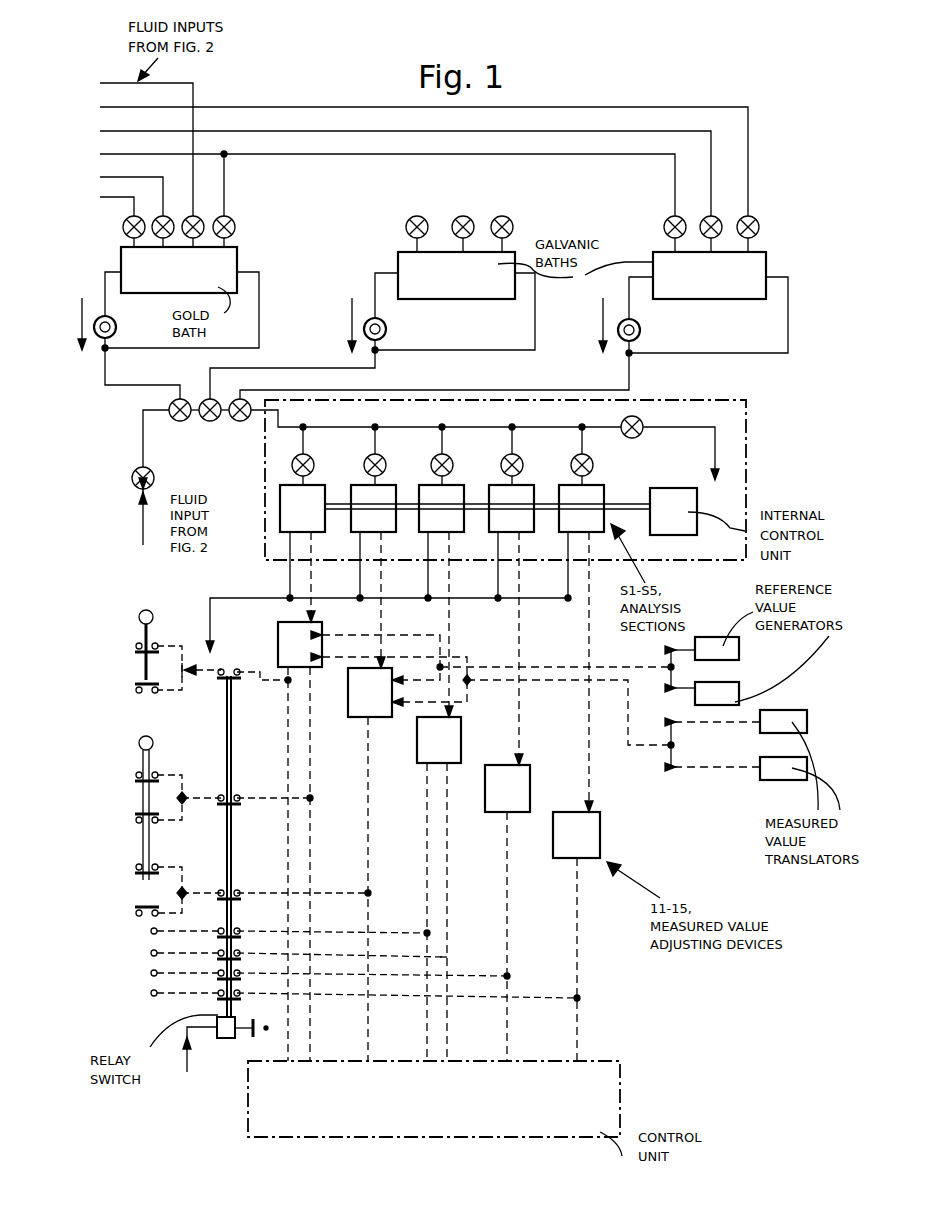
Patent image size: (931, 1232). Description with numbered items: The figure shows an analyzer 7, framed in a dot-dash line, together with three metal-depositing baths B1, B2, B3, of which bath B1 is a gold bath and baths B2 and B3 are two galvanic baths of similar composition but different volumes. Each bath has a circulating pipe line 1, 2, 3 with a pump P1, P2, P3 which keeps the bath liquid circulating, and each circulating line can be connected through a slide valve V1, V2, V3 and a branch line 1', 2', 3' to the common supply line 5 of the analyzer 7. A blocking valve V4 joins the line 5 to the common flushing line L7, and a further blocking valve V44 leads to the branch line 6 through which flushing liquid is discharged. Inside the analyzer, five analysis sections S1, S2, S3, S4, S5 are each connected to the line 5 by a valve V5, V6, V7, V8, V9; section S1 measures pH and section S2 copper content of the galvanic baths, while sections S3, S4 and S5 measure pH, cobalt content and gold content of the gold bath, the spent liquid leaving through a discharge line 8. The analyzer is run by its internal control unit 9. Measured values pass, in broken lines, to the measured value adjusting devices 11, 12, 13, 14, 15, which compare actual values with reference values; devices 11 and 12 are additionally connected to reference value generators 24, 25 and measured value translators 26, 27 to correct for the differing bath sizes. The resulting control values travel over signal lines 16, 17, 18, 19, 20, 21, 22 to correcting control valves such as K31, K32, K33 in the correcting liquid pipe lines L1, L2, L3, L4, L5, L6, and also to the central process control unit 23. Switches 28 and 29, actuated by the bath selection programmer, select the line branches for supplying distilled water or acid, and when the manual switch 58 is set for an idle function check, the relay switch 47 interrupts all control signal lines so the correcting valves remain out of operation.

The pipe line L1 is at (104, 107).
The pipe line L2 is at (104, 131).
The pipe line L3 is at (104, 154).
The pipe line L4 is at (104, 176).
The pipe line L5 is at (104, 198).
The pipe line L6 is at (104, 83).
The common flushing line L7 is at (144, 531).
The correcting control valve K31 is at (759, 218).
The correcting control valve K32 is at (722, 218).
The correcting control valve K33 is at (667, 212).
The gold bath B1 is at (179, 270).
The galvanic bath B2 is at (456, 275).
The galvanic bath B3 is at (709, 275).
The circulating pipe line 1 is at (179, 311).
The circulating pipe line 2 is at (459, 313).
The circulating pipe line 3 is at (709, 316).
The pump P1 is at (118, 328).
The pump P2 is at (388, 330).
The pump P3 is at (642, 331).
The branch line 1' is at (142, 373).
The branch line 2' is at (310, 374).
The branch line 3' is at (451, 376).
The valve V1 is at (178, 421).
The valve V2 is at (208, 421).
The valve V3 is at (238, 421).
The blocking valve V4 is at (140, 468).
The valve V5 is at (312, 458).
The valve V6 is at (384, 458).
The valve V7 is at (451, 458).
The valve V8 is at (521, 458).
The valve V9 is at (593, 466).
The blocking valve V44 is at (642, 434).
The common supply line 5 is at (546, 427).
The branch line 6 is at (715, 448).
The analyzer 7 is at (693, 400).
The discharge line 8 is at (212, 625).
The internal control unit 9 is at (673, 511).
The analysis section S1 is at (302, 553).
The analysis section S2 is at (373, 576).
The analysis section S3 is at (441, 601).
The analysis section S4 is at (511, 625).
The analysis section S5 is at (581, 648).
The measured value adjusting device 11 is at (374, 664).
The measured value adjusting device 12 is at (370, 692).
The measured value adjusting device 13 is at (439, 740).
The measured value adjusting device 14 is at (507, 788).
The measured value adjusting device 15 is at (576, 835).
The signal line 16 is at (310, 742).
The signal line 17 is at (286, 759).
The signal line 18 is at (368, 790).
The signal line 19 is at (427, 790).
The signal line 20 is at (447, 838).
The signal line 21 is at (506, 879).
The signal line 22 is at (578, 879).
The control unit 23 is at (620, 1092).
The reference value generator 24 is at (739, 650).
The reference value generator 25 is at (735, 700).
The measured value translator 26 is at (760, 733).
The measured value translator 27 is at (760, 780).
The switch 28 is at (142, 612).
The switch 29 is at (142, 738).
The relay switch 47 is at (228, 1038).
The manual switch 58 is at (196, 1067).